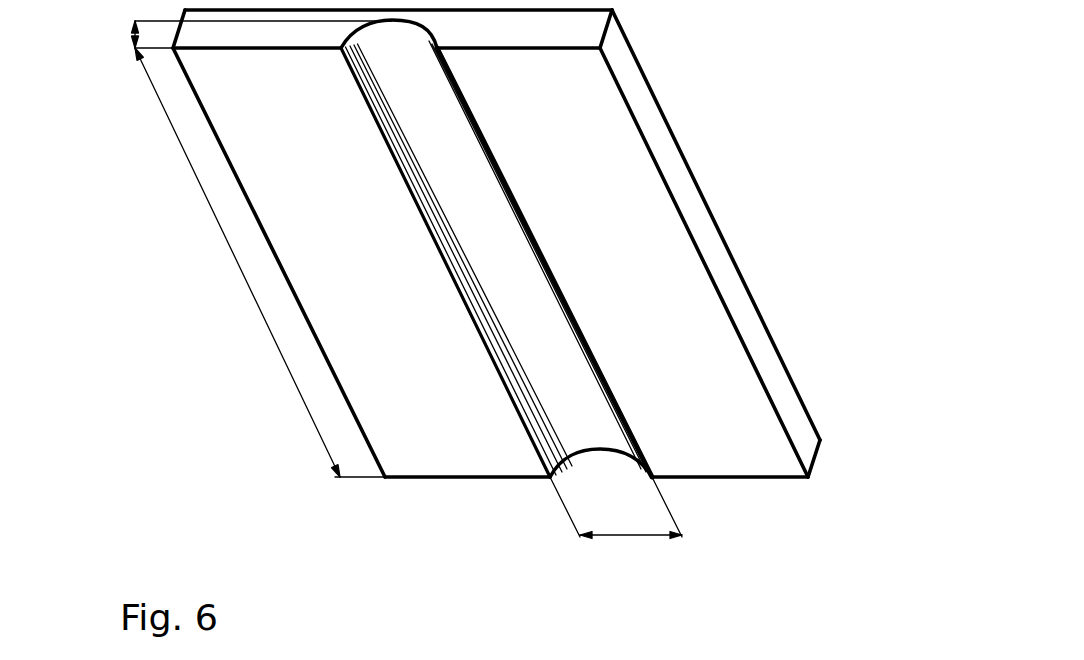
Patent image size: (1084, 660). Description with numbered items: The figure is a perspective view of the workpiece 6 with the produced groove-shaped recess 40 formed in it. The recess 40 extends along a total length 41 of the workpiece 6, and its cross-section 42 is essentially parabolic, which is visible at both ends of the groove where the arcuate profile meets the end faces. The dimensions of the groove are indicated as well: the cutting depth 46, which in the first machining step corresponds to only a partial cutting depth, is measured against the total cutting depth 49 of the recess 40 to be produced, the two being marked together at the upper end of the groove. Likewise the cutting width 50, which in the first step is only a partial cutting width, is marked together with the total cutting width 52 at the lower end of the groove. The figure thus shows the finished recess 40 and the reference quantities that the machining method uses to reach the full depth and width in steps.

The workpiece 6 is at (563, 243).
The recess 40 is at (578, 248).
The total length 41 is at (260, 262).
The cross-section 42 is at (430, 31).
The cutting depth 46 is at (218, 36).
The total cutting depth 49 is at (218, 36).
The cutting width 50 is at (616, 508).
The total cutting width 52 is at (616, 508).